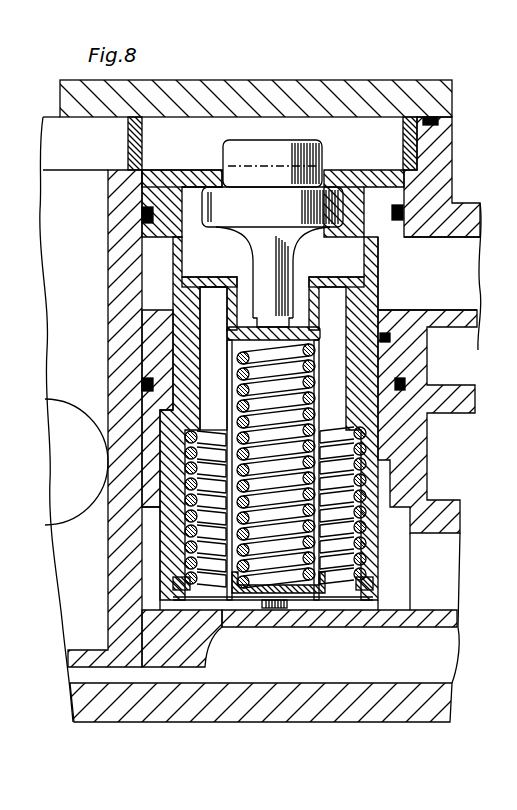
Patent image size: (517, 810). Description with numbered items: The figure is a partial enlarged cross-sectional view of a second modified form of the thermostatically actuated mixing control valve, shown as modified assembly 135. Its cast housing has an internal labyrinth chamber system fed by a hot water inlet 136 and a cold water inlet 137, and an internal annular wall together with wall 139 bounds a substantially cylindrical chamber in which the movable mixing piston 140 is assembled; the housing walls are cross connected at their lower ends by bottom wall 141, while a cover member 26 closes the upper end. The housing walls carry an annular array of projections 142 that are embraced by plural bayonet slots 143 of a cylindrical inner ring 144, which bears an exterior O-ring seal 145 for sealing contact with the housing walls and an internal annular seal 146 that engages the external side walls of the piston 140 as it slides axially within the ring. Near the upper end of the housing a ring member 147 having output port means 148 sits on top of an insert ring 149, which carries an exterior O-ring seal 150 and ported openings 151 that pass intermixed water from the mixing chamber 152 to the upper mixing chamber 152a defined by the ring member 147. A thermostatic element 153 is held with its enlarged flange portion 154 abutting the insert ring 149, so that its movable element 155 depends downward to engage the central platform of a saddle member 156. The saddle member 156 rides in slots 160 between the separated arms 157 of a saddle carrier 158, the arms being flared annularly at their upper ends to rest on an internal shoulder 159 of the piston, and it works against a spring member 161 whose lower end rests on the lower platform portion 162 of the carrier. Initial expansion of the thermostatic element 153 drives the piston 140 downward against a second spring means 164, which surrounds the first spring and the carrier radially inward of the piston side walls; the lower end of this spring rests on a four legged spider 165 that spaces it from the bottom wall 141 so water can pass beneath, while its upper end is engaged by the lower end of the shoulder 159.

The cover member 26 is at (298, 92).
The modified assembly 135 is at (42, 108).
The hot water inlet 136 is at (122, 333).
The cold water inlet 137 is at (463, 258).
The wall 139 is at (415, 457).
The mixing piston 140 is at (382, 298).
The bottom wall 141 is at (413, 628).
The projections 142 is at (152, 477).
The bayonet slots 143 is at (127, 556).
The inner ring 144 is at (157, 323).
The O-ring seal 145 is at (140, 385).
The annular seal 146 is at (158, 338).
The ring member 147 is at (403, 146).
The output port means 148 is at (130, 142).
The insert ring 149 is at (387, 188).
The O-ring seal 150 is at (140, 222).
The ported openings 151 is at (190, 175).
The mixing chamber 152 is at (376, 248).
The upper mixing chamber 152a is at (215, 143).
The thermostatic element 153 is at (261, 138).
The enlarged flange portion 154 is at (292, 213).
The movable element 155 is at (290, 326).
The saddle member 156 is at (322, 335).
The separated arms 157 is at (233, 315).
The saddle carrier 158 is at (214, 266).
The internal shoulder 159 is at (362, 292).
The slots 160 is at (322, 430).
The spring member 161 is at (302, 575).
The lower platform portion 162 is at (252, 592).
The second spring means 164 is at (362, 574).
The four legged spider 165 is at (356, 602).